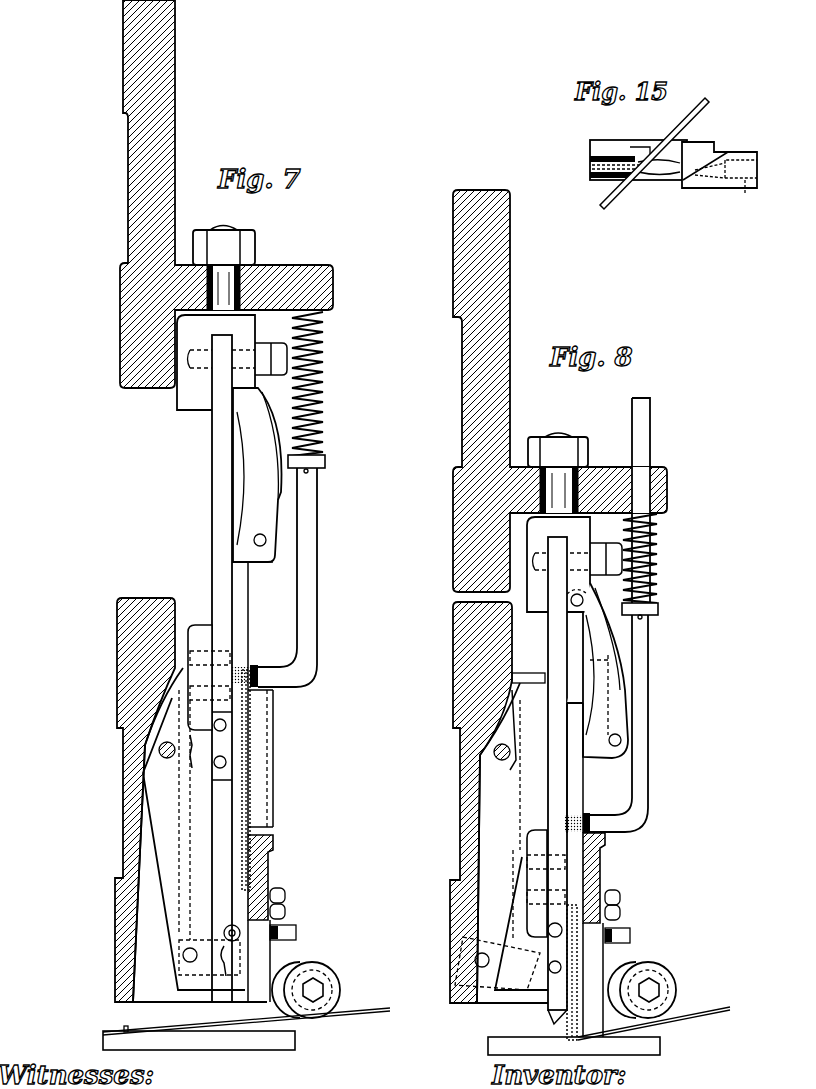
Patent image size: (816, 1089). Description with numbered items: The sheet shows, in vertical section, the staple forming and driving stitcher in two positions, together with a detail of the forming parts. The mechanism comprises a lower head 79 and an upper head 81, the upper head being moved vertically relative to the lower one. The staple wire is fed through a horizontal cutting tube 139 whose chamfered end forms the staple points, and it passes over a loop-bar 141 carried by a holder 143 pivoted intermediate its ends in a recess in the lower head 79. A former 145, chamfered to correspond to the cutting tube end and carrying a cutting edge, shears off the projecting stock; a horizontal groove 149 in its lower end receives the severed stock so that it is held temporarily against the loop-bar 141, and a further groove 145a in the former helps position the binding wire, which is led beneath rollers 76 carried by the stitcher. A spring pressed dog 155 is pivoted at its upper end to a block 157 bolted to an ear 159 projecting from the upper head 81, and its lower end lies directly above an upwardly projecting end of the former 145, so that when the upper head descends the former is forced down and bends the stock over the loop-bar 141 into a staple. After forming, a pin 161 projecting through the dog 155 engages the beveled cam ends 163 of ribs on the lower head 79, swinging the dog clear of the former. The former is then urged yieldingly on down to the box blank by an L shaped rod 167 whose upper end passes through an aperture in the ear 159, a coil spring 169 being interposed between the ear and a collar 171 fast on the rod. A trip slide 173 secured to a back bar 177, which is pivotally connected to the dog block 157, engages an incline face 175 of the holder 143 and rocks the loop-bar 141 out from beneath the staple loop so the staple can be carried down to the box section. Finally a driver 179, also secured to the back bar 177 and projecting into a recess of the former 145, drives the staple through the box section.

In FIG. 7, the upper head 81 is at (167, 96).
In FIG. 8, the upper head 81 is at (499, 292).
In FIG. 7, the ear 159 is at (273, 268).
In FIG. 8, the ear 159 is at (605, 473).
In FIG. 7, the block 157 is at (200, 396).
In FIG. 8, the block 157 is at (540, 603).
In FIG. 7, the back bar 177 is at (218, 510).
In FIG. 8, the back bar 177 is at (553, 657).
In FIG. 7, the spring pressed dog 155 is at (268, 518).
In FIG. 8, the spring pressed dog 155 is at (620, 724).
In FIG. 7, the pin 161 is at (267, 540).
In FIG. 8, the pin 161 is at (622, 741).
In FIG. 7, the coil spring 169 is at (325, 378).
In FIG. 8, the coil spring 169 is at (659, 545).
In FIG. 7, the collar 171 is at (326, 462).
In FIG. 8, the collar 171 is at (659, 609).
In FIG. 7, the L shaped rod 167 is at (312, 618).
In FIG. 8, the L shaped rod 167 is at (650, 790).
In FIG. 7, the cam ends 163 is at (282, 648).
In FIG. 7, the former 145 is at (246, 594).
In FIG. 8, the former 145 is at (590, 878).
In FIG. 15, the former 145 is at (617, 146).
In FIG. 7, the driver 179 is at (223, 808).
In FIG. 8, the driver 179 is at (560, 1030).
In FIG. 7, the trip slide 173 is at (198, 625).
In FIG. 8, the trip slide 173 is at (532, 832).
In FIG. 7, the lower head 79 is at (123, 703).
In FIG. 8, the lower head 79 is at (453, 705).
In FIG. 7, the holder 143 is at (162, 808).
In FIG. 8, the holder 143 is at (485, 808).
In FIG. 7, the incline face 175 is at (190, 829).
In FIG. 8, the incline face 175 is at (512, 835).
In FIG. 7, the loop-bar 141 is at (226, 963).
In FIG. 8, the loop-bar 141 is at (523, 972).
In FIG. 7, the rollers 76 is at (318, 970).
In FIG. 8, the rollers 76 is at (665, 1000).
In FIG. 15, the horizontal groove 149 is at (592, 169).
In FIG. 15, the groove 145a is at (659, 140).
In FIG. 15, the cutting tube 139 is at (741, 188).